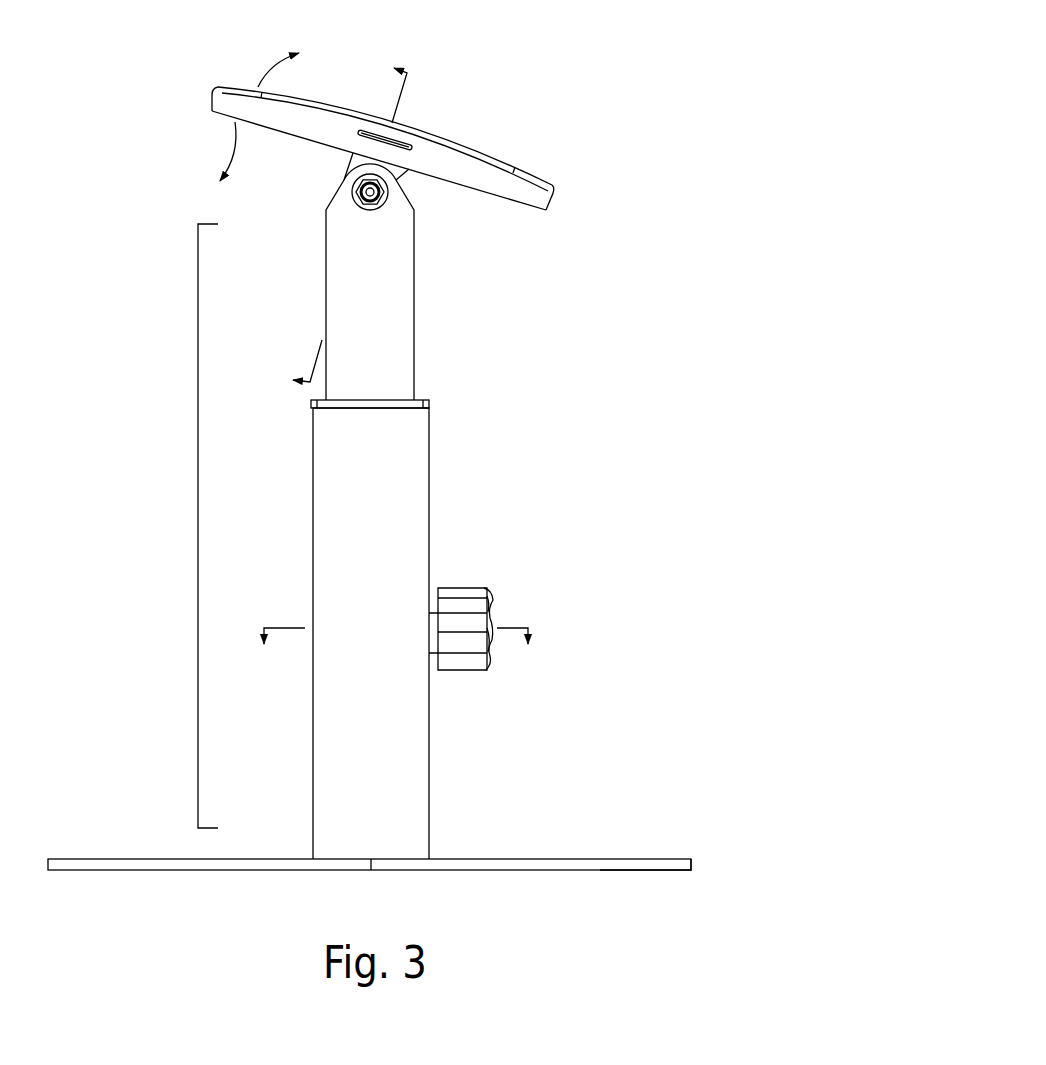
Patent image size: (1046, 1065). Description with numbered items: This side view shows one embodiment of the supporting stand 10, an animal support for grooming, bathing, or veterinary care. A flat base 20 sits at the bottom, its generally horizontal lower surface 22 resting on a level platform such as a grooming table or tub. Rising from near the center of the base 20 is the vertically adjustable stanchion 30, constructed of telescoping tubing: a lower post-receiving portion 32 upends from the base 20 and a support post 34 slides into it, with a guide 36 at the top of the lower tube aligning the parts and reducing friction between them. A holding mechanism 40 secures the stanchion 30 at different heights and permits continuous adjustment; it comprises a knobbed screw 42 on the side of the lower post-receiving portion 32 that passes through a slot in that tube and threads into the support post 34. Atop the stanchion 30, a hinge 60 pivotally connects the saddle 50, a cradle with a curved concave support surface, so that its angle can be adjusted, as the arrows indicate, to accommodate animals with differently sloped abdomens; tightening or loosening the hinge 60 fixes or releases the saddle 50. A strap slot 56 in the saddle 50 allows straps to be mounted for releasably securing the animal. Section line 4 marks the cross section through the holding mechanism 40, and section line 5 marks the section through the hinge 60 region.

The supporting stand 10 is at (752, 372).
The base 20 is at (142, 862).
The lower surface 22 is at (668, 871).
The adjustable stanchion 30 is at (333, 511).
The lower post-receiving portion 32 is at (322, 560).
The support post 34 is at (405, 304).
The guide 36 is at (418, 401).
The holding mechanism 40 is at (469, 570).
The knobbed screw 42 is at (480, 602).
The saddle 50 is at (228, 103).
The strap slot 56 is at (404, 139).
The hinge 60 is at (314, 206).
The section line 4- 4 is at (398, 650).
The section line 5- 5 is at (340, 219).